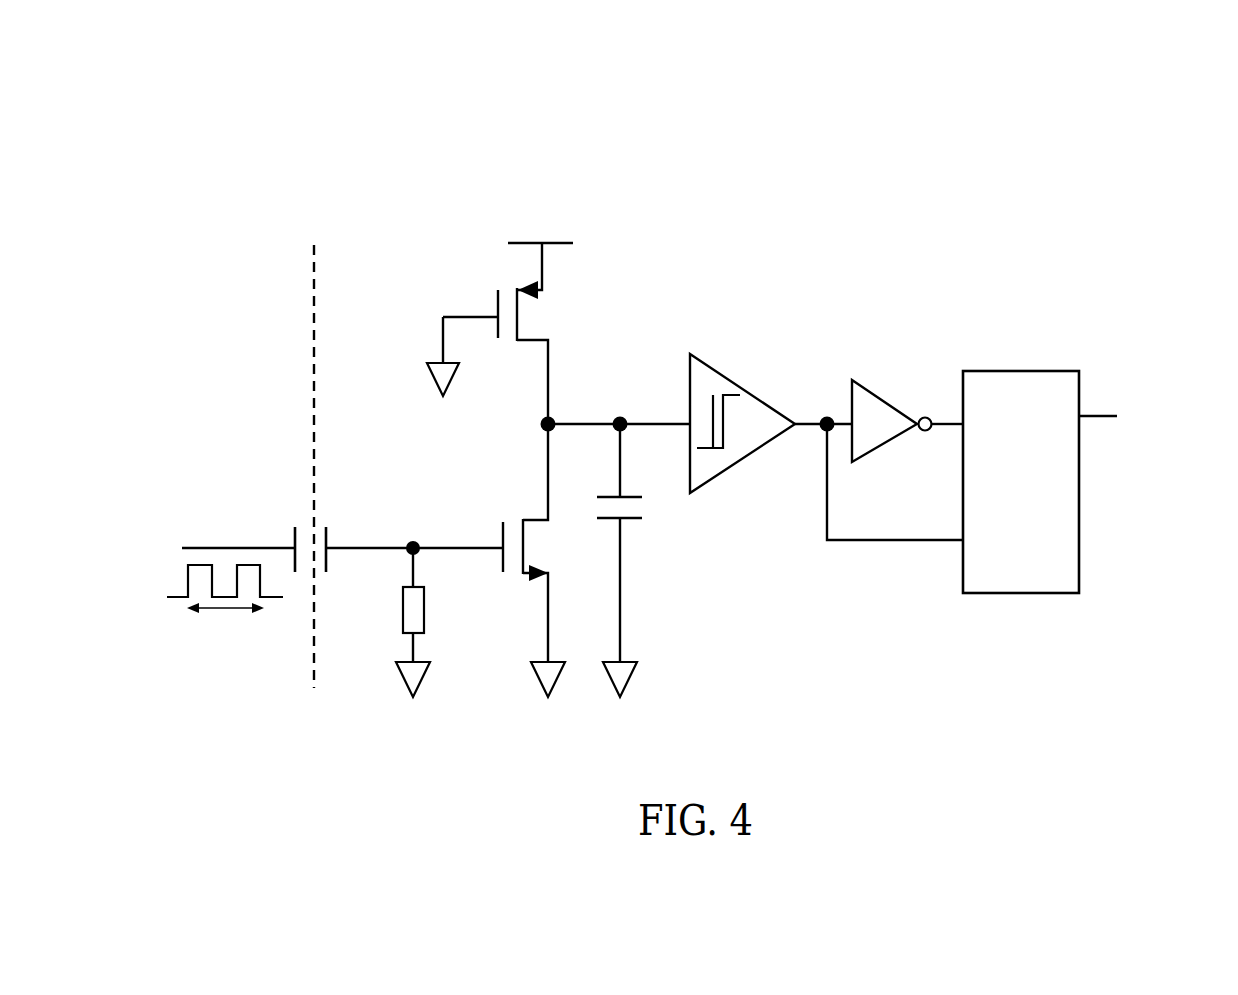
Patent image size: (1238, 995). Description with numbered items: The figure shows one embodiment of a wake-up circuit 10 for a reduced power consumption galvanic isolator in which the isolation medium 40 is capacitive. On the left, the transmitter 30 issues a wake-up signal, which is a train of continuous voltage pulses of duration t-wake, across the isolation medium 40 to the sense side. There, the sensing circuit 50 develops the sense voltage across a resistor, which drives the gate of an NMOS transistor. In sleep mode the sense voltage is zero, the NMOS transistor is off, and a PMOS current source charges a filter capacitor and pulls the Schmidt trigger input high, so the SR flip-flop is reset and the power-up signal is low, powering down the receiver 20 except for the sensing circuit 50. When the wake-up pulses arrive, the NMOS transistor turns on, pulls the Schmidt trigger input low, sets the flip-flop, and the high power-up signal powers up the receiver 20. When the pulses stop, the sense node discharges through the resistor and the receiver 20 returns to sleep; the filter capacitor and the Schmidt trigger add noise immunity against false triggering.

The wake-up detection system 10 is at (685, 380).
The receiver 20 is at (946, 509).
The transmitter 30 is at (231, 407).
The isolation medium 40 is at (314, 431).
The sensing circuit 50 is at (508, 423).